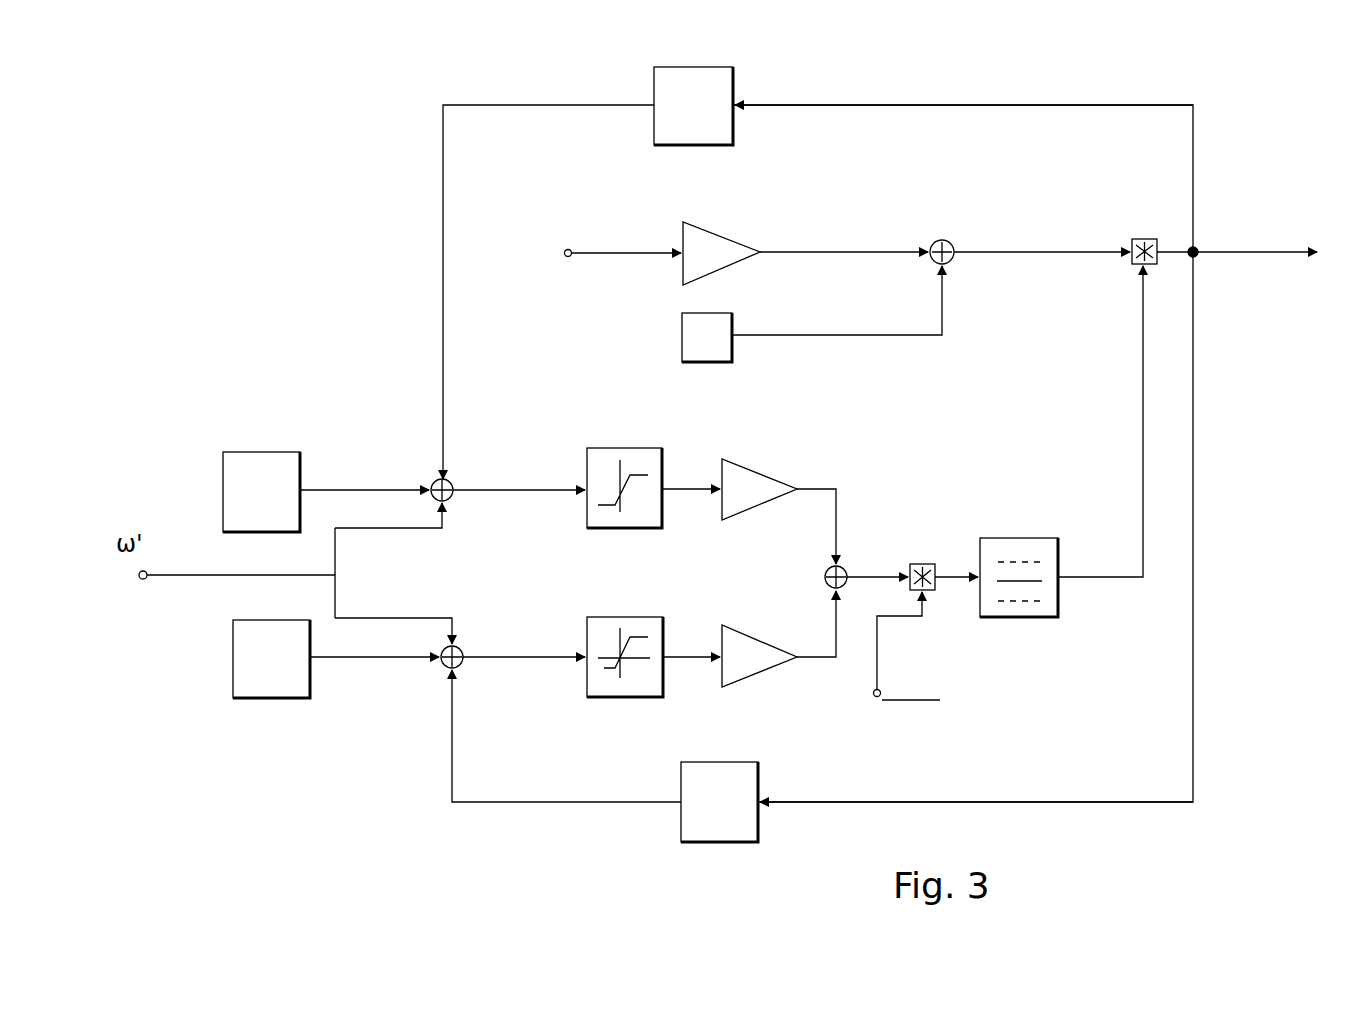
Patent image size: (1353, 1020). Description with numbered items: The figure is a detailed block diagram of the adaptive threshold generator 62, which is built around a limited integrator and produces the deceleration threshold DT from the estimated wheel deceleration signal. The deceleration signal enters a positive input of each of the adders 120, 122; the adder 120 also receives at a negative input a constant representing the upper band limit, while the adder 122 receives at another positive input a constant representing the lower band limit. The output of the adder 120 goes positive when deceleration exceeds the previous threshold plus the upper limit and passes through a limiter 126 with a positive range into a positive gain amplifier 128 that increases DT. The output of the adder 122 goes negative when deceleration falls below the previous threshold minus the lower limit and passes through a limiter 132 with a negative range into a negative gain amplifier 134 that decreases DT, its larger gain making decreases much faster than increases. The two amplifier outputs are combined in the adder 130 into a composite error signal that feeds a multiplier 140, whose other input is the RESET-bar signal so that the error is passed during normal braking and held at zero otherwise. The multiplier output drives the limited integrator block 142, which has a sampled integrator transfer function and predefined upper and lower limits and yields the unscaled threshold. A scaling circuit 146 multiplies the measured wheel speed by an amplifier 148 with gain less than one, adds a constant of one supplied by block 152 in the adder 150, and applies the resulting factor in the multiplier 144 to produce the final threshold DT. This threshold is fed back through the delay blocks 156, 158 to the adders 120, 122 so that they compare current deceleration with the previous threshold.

The adaptive threshold generator 62 is at (1240, 840).
The adder 120 is at (452, 500).
The adder 122 is at (462, 652).
The limiter 126 is at (608, 448).
The positive gain amplifier 128 is at (721, 470).
The adder 130 is at (847, 572).
The limiter 132 is at (605, 617).
The negative gain amplifier 134 is at (745, 688).
The multiplier 140 is at (924, 563).
The limited integrator block 142 is at (1045, 538).
The multiplier 144 is at (1143, 238).
The scaling circuit 146 is at (795, 212).
The amplifier 148 is at (706, 222).
The adder 150 is at (950, 238).
The constant block 152 is at (732, 350).
The delay block 156 is at (712, 67).
The delay block 158 is at (680, 782).